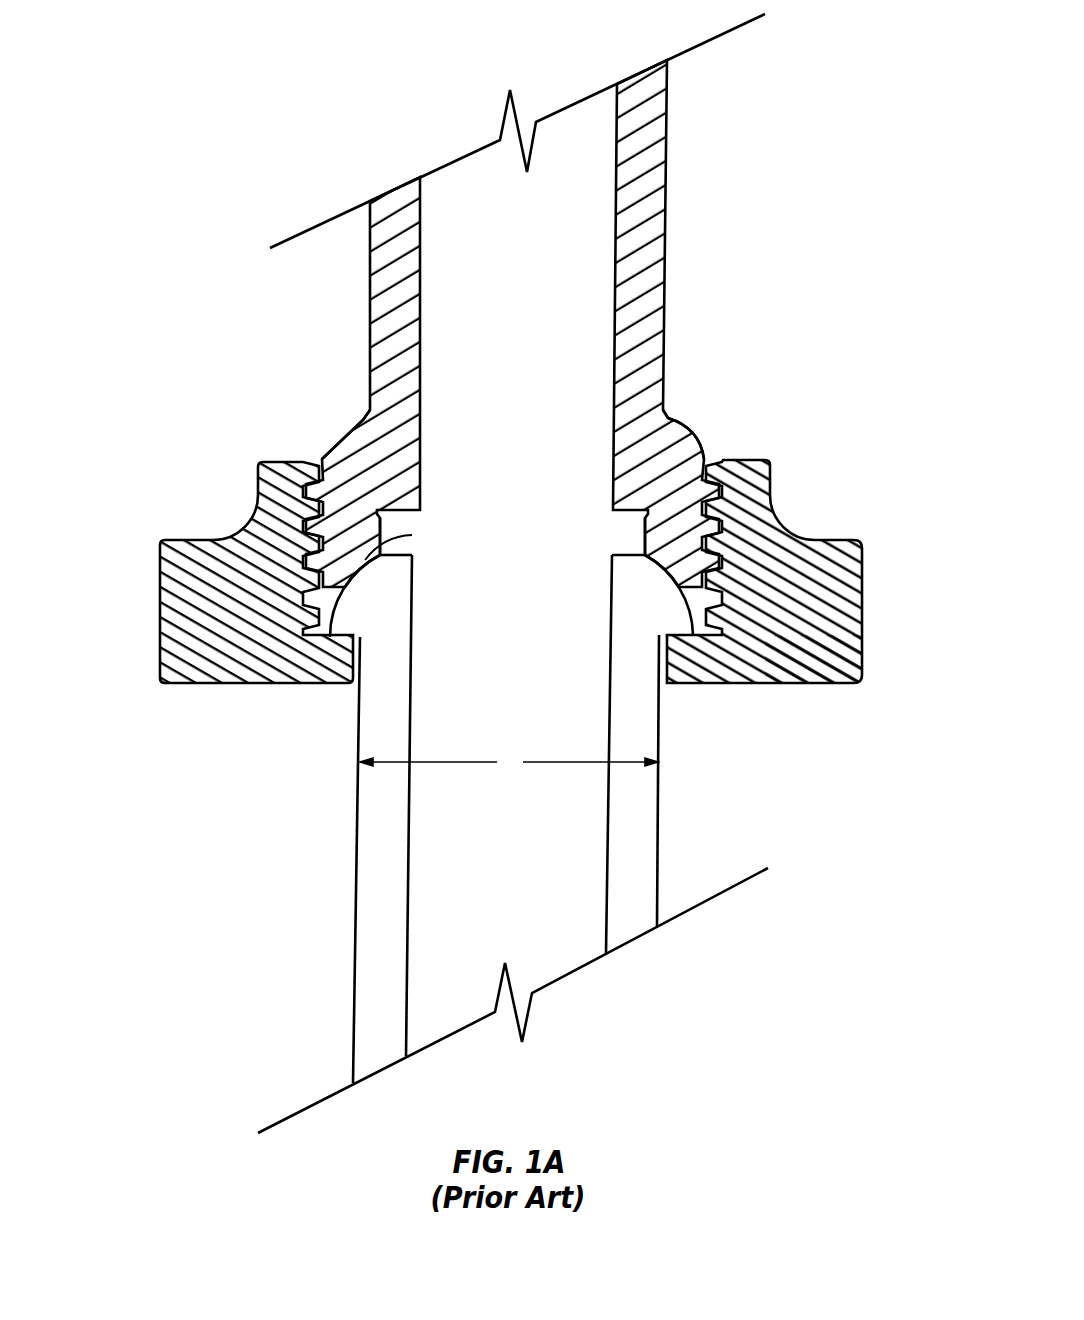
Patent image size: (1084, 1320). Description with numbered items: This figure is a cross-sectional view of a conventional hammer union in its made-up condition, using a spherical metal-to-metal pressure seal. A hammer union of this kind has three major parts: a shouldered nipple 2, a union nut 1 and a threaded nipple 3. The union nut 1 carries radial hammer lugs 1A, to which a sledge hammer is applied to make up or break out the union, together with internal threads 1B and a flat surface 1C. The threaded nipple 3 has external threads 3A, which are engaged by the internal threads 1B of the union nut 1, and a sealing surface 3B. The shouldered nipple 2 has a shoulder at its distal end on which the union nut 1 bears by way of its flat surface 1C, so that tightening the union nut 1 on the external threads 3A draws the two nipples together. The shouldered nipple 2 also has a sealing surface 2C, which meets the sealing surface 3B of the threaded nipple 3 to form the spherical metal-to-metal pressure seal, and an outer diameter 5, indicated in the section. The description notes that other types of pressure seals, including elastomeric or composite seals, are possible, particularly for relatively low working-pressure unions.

The union nut 1 is at (508, 599).
The hammer lugs 1A is at (178, 614).
The internal threads 1B is at (308, 636).
The flat surface 1C is at (798, 684).
The shouldered nipple 2 is at (520, 819).
The sealing surface 2C is at (377, 577).
The threaded nipple 3 is at (667, 268).
The external threads 3A is at (333, 460).
The sealing surface 3B is at (378, 548).
The outer diameter 5 is at (509, 762).